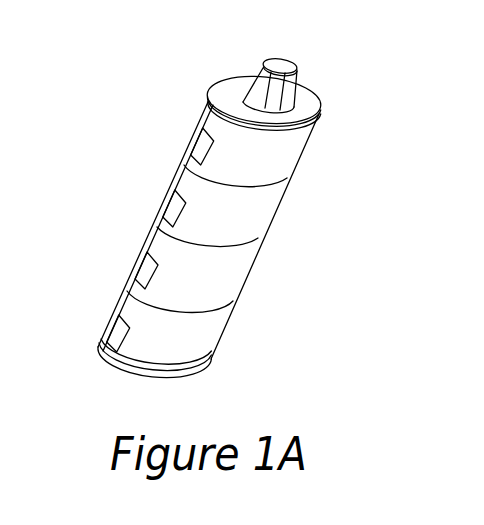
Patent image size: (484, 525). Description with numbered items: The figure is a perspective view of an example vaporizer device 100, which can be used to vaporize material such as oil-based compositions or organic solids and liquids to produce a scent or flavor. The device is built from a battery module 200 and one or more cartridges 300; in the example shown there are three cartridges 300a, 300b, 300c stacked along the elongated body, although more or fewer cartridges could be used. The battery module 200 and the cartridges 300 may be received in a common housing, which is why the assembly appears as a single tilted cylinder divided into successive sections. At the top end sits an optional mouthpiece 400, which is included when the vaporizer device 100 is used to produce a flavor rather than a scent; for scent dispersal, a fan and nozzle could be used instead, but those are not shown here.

The vaporizer device 100 is at (374, 98).
The battery module 200 is at (212, 327).
The cartridge 300 is at (149, 111).
The cartridge 300a is at (288, 149).
The cartridge 300b is at (258, 218).
The cartridge 300c is at (233, 277).
The mouthpiece 400 is at (329, 51).